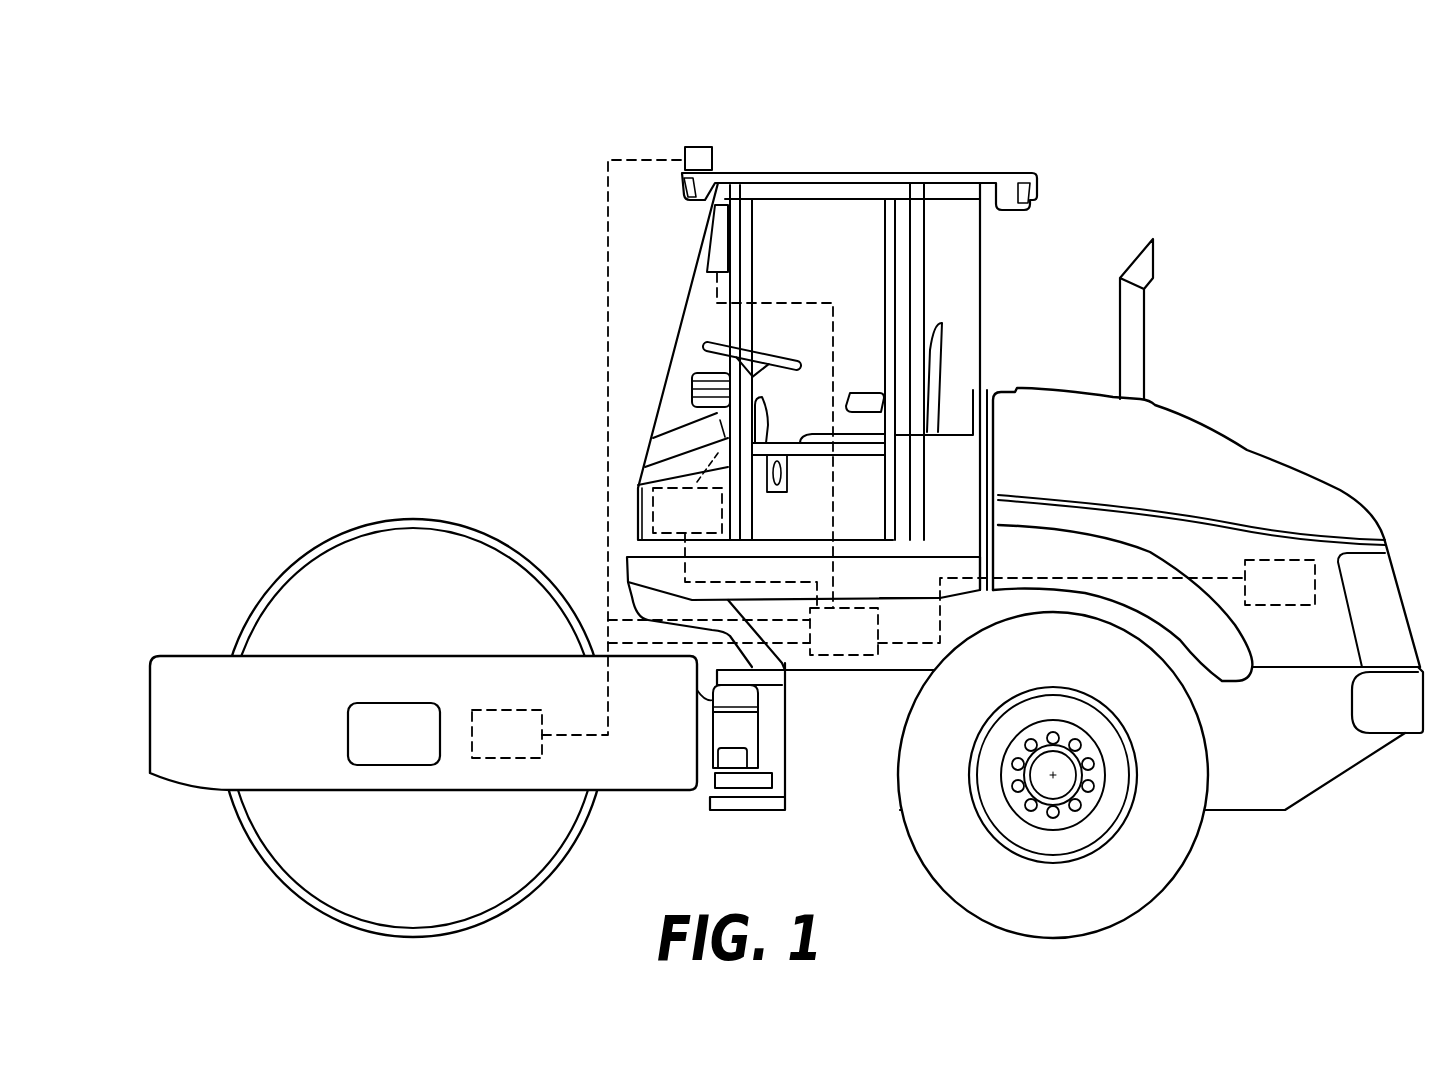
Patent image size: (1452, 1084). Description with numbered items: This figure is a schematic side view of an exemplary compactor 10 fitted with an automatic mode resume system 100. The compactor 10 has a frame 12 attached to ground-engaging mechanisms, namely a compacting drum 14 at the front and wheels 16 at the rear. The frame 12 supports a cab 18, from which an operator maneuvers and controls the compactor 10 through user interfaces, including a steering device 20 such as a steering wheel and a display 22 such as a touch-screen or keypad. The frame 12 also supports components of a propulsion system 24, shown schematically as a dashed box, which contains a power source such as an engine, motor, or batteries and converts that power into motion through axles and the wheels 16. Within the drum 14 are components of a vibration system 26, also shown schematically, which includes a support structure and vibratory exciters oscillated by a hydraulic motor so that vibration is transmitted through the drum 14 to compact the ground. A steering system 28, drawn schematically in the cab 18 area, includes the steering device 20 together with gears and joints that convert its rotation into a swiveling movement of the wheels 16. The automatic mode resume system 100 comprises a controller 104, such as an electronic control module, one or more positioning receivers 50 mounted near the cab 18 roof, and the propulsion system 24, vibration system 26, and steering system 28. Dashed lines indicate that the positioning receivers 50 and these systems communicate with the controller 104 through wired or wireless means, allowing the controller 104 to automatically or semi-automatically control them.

The compactor 10 is at (1078, 97).
The automatic mode resume system 100 is at (377, 186).
The frame 12 is at (848, 793).
The compacting drum 14 is at (263, 582).
The wheels 16 is at (1190, 852).
The cab 18 is at (872, 173).
The steering device 20 is at (708, 345).
The display 22 is at (710, 227).
The propulsion system 24 is at (1290, 595).
The vibration system 26 is at (516, 746).
The steering system 28 is at (697, 523).
The positioning receivers 50 is at (708, 147).
The controller 104 is at (859, 644).